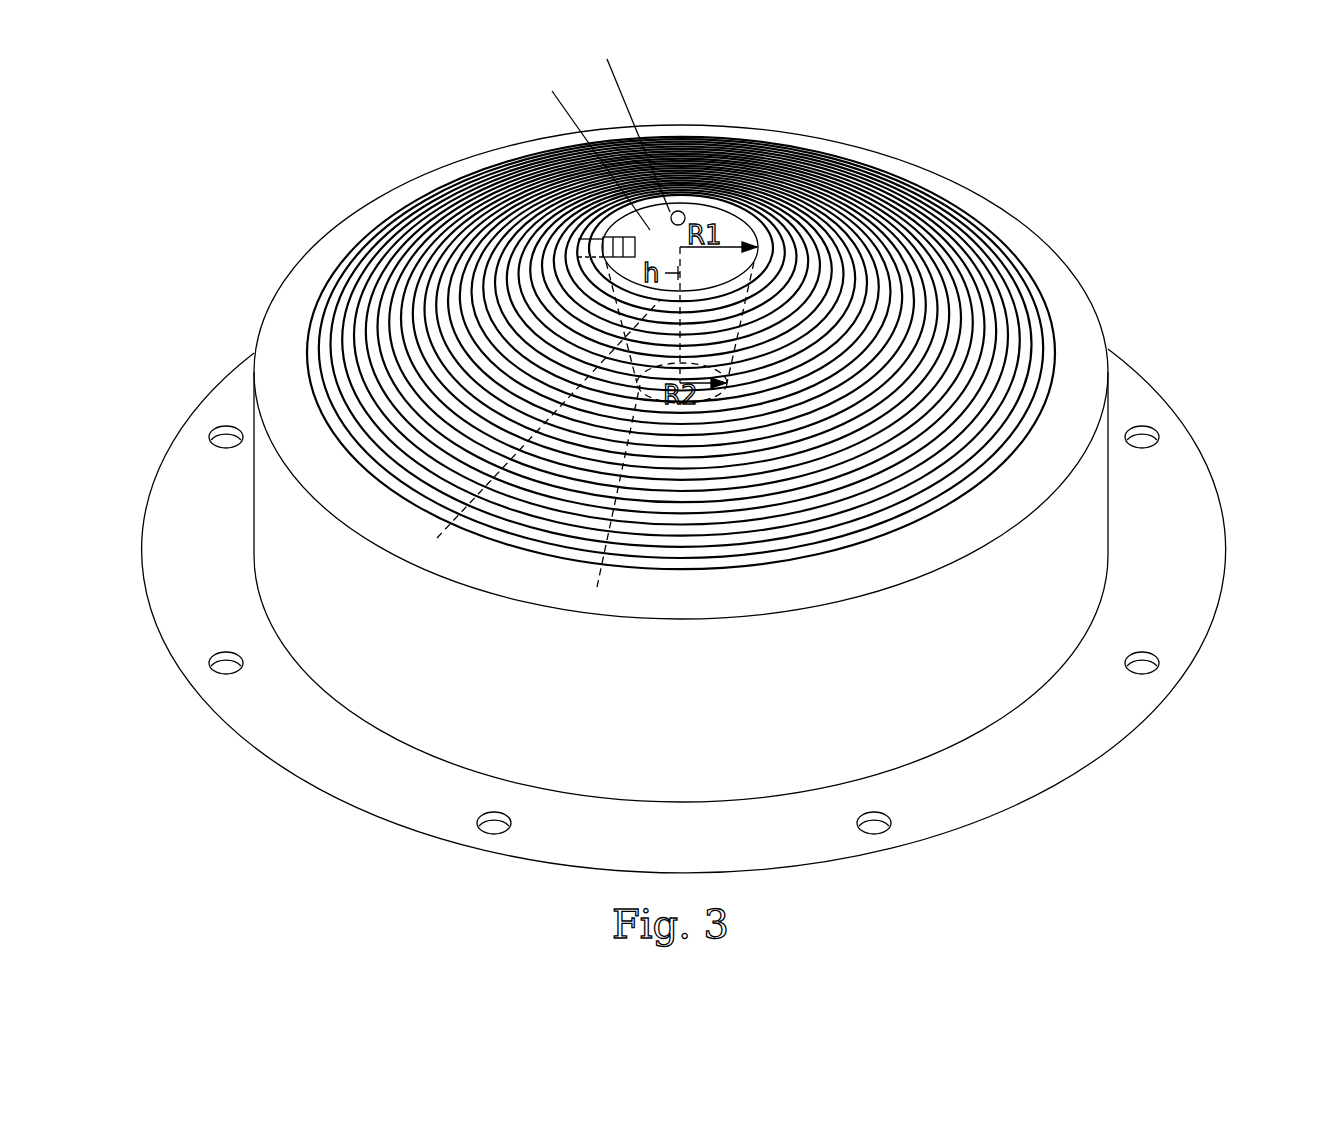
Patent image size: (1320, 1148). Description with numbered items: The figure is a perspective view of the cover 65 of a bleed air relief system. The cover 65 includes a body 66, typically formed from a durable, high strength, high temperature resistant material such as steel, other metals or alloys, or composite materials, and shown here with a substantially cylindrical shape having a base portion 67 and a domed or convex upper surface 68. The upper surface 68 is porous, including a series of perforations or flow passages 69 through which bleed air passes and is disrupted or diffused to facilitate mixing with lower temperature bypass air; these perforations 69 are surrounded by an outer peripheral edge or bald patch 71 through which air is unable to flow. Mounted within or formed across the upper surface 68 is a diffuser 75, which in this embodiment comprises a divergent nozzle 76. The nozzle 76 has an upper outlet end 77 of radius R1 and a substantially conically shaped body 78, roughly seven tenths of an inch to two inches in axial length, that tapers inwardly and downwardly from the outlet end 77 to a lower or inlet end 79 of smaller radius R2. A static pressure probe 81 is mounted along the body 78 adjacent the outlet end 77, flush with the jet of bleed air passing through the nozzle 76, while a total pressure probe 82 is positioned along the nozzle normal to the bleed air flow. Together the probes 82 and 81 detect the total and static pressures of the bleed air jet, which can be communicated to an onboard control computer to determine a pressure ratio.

The cover 65 is at (1035, 212).
The body 66 is at (1117, 425).
The base portion 67 is at (1158, 530).
The domed or convex surface 68 is at (1078, 398).
The perforations or flow passages 69 is at (1066, 317).
The outer peripheral edge or bald patch 71 is at (738, 604).
The diffuser 75 is at (683, 192).
The nozzle 76 is at (778, 152).
The upper outlet end 77 is at (552, 91).
The conically shaped body 78 is at (437, 538).
The lower or inlet end 79 is at (597, 587).
The static pressure probe 81 is at (607, 59).
The total pressure probe 82 is at (603, 243).